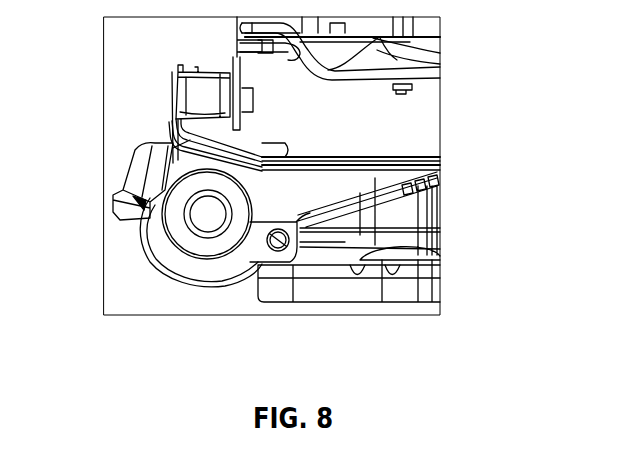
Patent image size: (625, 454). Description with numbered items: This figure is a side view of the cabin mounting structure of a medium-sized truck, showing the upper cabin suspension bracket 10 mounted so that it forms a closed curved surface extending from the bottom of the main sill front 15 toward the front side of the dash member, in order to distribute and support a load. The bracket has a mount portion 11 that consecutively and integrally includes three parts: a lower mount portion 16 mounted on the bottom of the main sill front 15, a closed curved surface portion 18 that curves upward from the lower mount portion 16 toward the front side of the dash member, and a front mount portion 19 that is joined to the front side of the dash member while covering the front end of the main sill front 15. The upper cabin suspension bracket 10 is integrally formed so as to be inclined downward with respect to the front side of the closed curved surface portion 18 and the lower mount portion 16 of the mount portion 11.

The upper cabin suspension bracket 10 is at (165, 250).
The mount portion 11 is at (315, 187).
The main sill front 15 is at (410, 112).
The lower mount portion 16 is at (400, 204).
The closed curved surface portion 18 is at (227, 146).
The front mount portion 19 is at (171, 113).